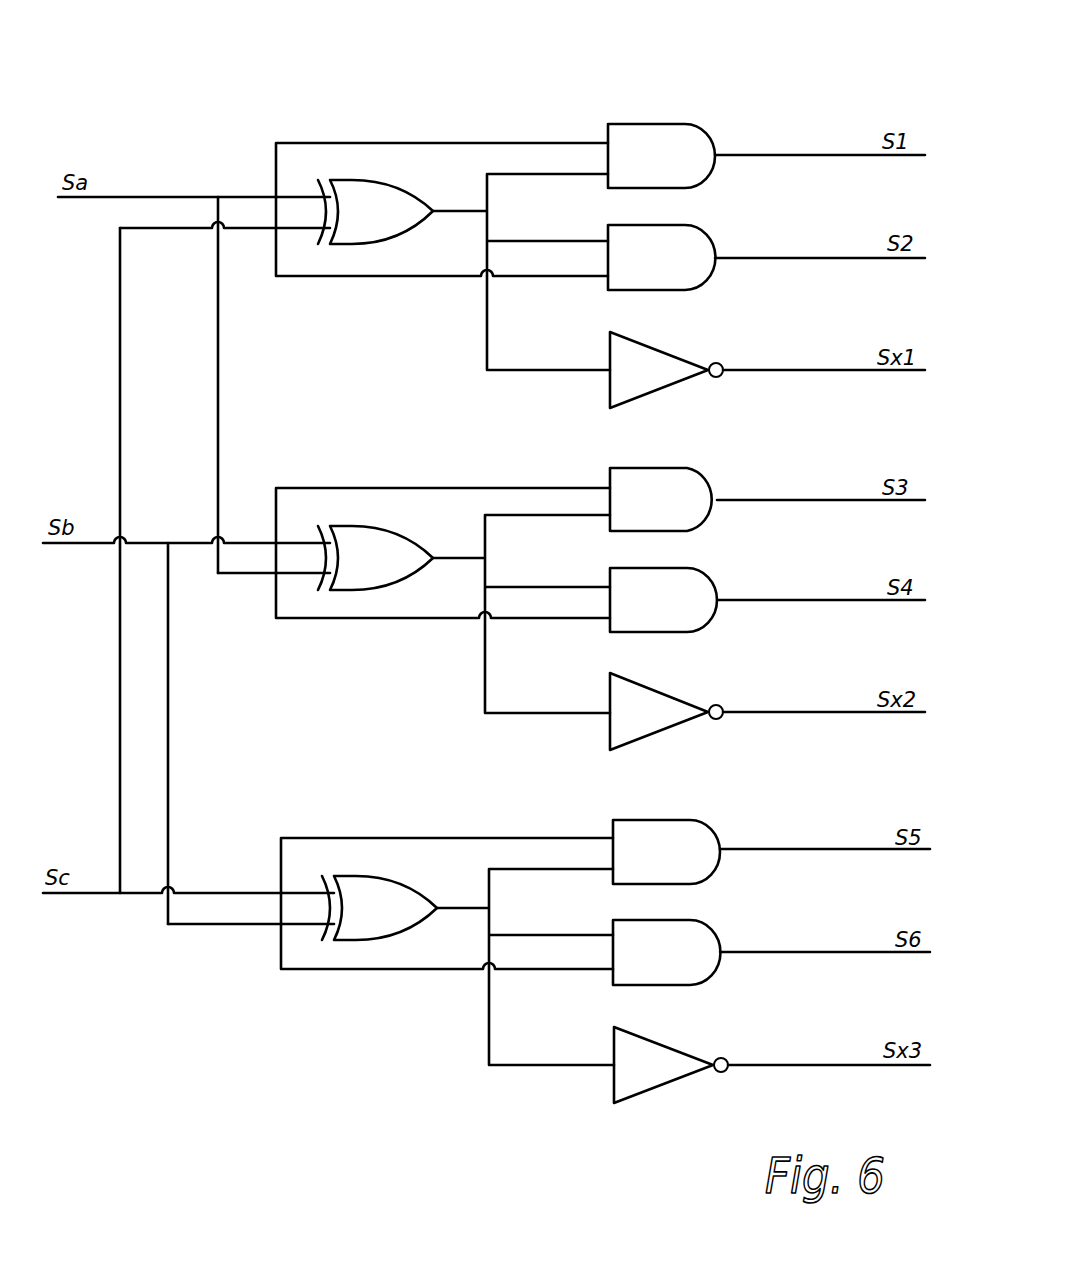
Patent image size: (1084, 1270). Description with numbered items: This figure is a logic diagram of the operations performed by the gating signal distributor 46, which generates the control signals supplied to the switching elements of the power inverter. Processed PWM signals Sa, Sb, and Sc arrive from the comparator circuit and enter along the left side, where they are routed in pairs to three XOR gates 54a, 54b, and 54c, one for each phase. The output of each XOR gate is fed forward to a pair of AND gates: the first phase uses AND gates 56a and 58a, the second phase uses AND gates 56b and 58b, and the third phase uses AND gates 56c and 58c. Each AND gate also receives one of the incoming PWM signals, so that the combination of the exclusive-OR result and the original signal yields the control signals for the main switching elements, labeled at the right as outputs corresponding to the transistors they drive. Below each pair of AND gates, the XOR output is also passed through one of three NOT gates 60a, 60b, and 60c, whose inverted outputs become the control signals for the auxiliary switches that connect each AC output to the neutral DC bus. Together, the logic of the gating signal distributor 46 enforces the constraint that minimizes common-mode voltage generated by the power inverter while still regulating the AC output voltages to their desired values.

The gating signal distributor 46 is at (187, 140).
The XOR gate 54a is at (397, 184).
The XOR gate 54b is at (388, 529).
The XOR gate 54c is at (400, 878).
The AND gate 56a is at (688, 124).
The AND gate 56b is at (690, 468).
The AND gate 56c is at (690, 820).
The AND gate 58a is at (682, 226).
The AND gate 58b is at (686, 568).
The AND gate 58c is at (693, 921).
The NOT gate 60a is at (657, 352).
The NOT gate 60b is at (660, 692).
The NOT gate 60c is at (682, 1048).